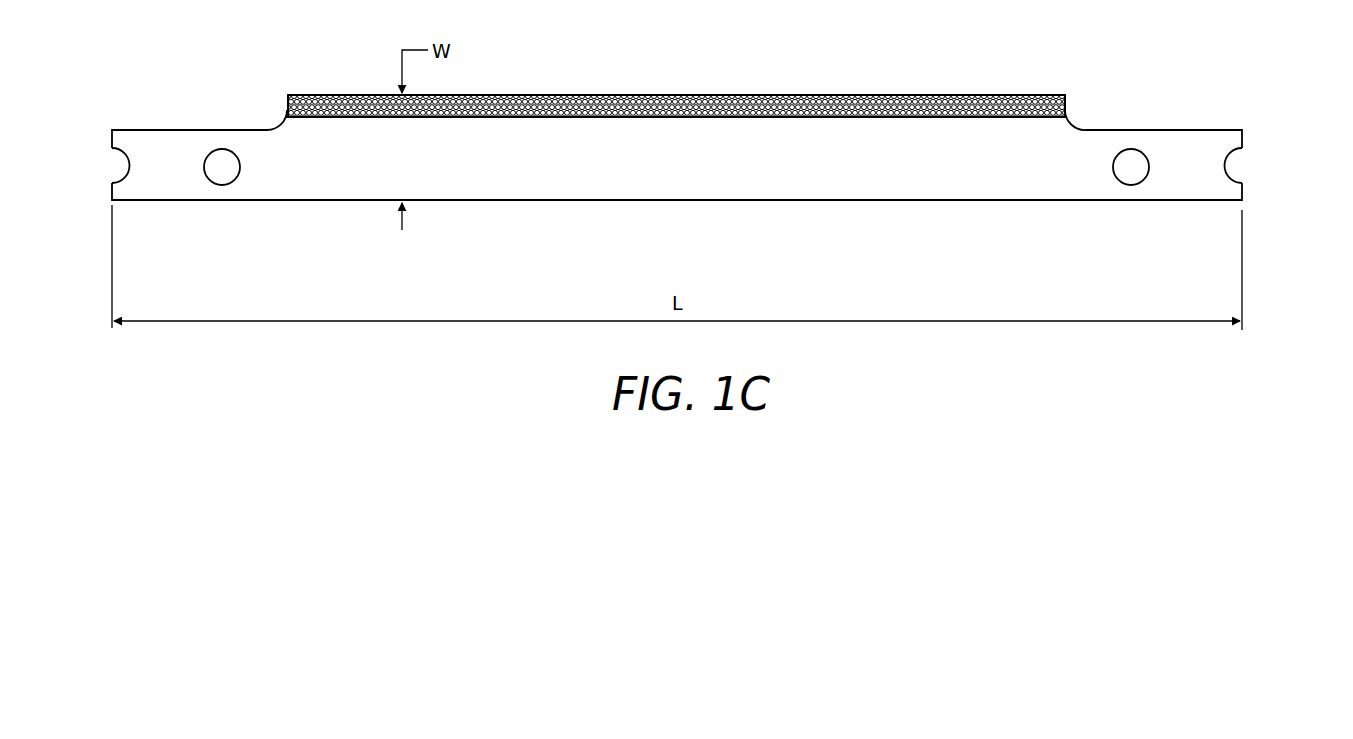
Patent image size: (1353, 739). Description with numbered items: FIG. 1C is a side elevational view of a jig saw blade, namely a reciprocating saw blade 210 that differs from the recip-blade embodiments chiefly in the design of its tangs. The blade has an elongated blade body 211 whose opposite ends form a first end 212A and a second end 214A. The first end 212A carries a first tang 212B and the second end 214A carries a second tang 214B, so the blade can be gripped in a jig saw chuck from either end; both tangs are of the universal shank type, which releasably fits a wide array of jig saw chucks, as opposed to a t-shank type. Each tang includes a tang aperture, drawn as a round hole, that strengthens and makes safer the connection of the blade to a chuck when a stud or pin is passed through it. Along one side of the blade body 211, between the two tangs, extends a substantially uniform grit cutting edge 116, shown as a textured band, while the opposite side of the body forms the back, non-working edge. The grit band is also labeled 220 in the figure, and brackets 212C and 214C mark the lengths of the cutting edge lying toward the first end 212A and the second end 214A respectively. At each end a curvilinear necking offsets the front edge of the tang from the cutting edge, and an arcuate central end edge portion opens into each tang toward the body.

The cutting edge 116 is at (547, 88).
The reciprocating saw blade 210 is at (634, 90).
The blade body 211 is at (962, 187).
The first end 212A is at (288, 82).
The first tang 212B is at (107, 154).
The first strip half 212C is at (672, 238).
The second end 214A is at (1242, 84).
The second tang 214B is at (1247, 160).
The second strip half 214C is at (1067, 238).
The coating layer 220 is at (890, 95).